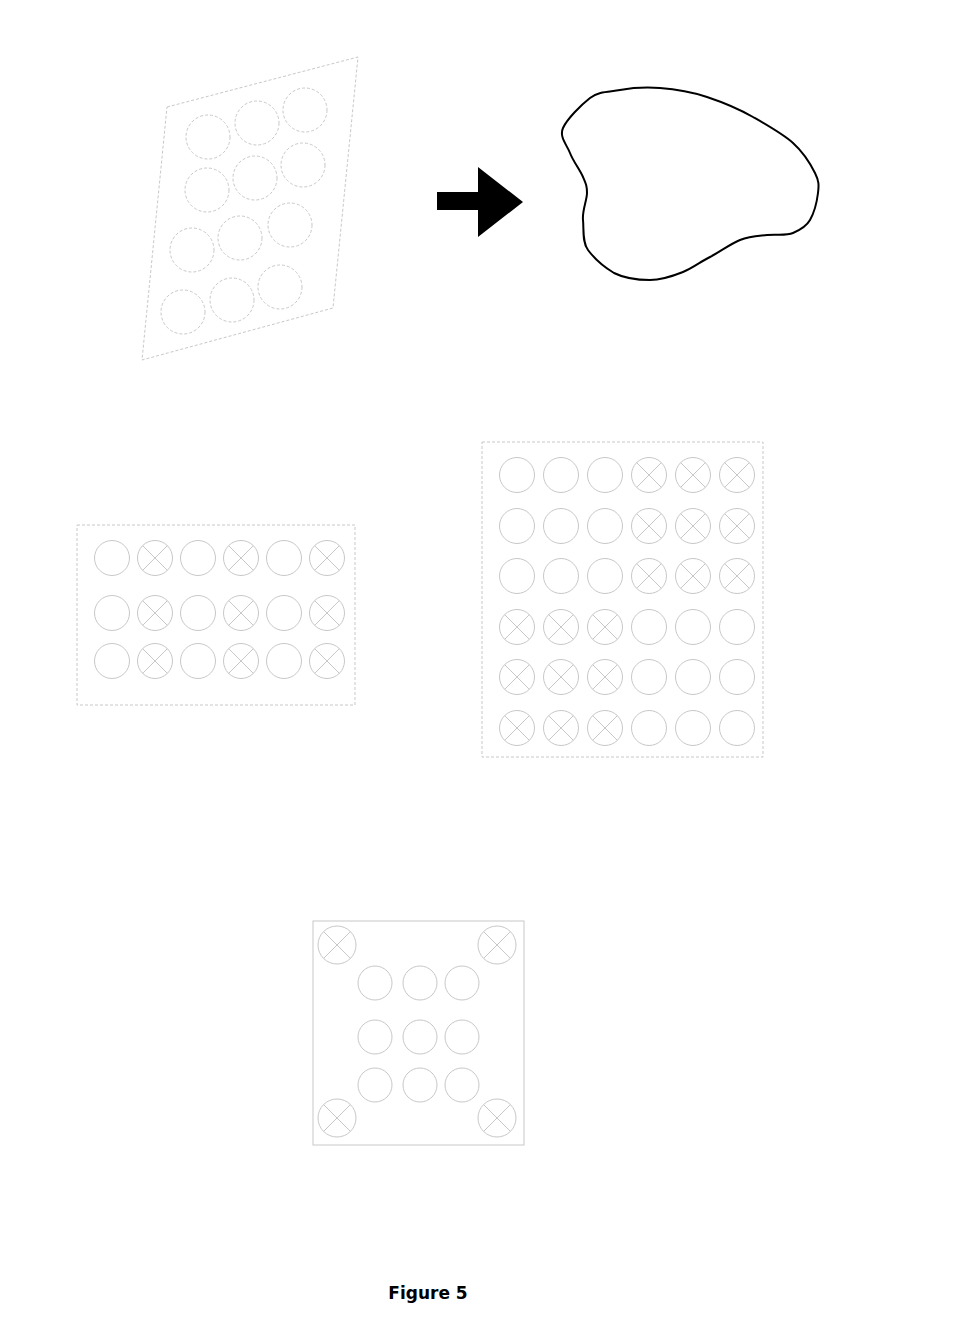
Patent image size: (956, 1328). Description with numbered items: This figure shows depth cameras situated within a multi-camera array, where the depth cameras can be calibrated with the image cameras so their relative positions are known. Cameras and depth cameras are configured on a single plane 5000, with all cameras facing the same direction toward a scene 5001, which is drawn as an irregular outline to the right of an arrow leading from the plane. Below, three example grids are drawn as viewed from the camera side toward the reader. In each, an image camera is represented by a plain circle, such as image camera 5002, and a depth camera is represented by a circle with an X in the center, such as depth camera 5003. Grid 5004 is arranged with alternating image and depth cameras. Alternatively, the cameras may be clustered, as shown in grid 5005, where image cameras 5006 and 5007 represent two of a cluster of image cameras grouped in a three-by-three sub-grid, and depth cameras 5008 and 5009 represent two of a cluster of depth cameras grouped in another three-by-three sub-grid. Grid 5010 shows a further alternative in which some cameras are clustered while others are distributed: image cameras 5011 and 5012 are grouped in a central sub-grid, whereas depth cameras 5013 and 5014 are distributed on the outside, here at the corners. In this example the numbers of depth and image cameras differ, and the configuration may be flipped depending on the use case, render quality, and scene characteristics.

The single plane 5000 is at (168, 98).
The scene 5001 is at (673, 128).
The image camera 5002 is at (113, 563).
The depth camera 5003 is at (155, 552).
The grid 5004 is at (350, 532).
The grid 5005 is at (750, 445).
The image camera 5006 is at (513, 475).
The image camera 5007 is at (562, 467).
The depth camera 5008 is at (733, 470).
The depth camera 5009 is at (740, 530).
The grid 5010 is at (438, 938).
The image camera 5011 is at (375, 988).
The image camera 5012 is at (372, 1036).
The depth camera 5013 is at (335, 952).
The depth camera 5014 is at (507, 1113).